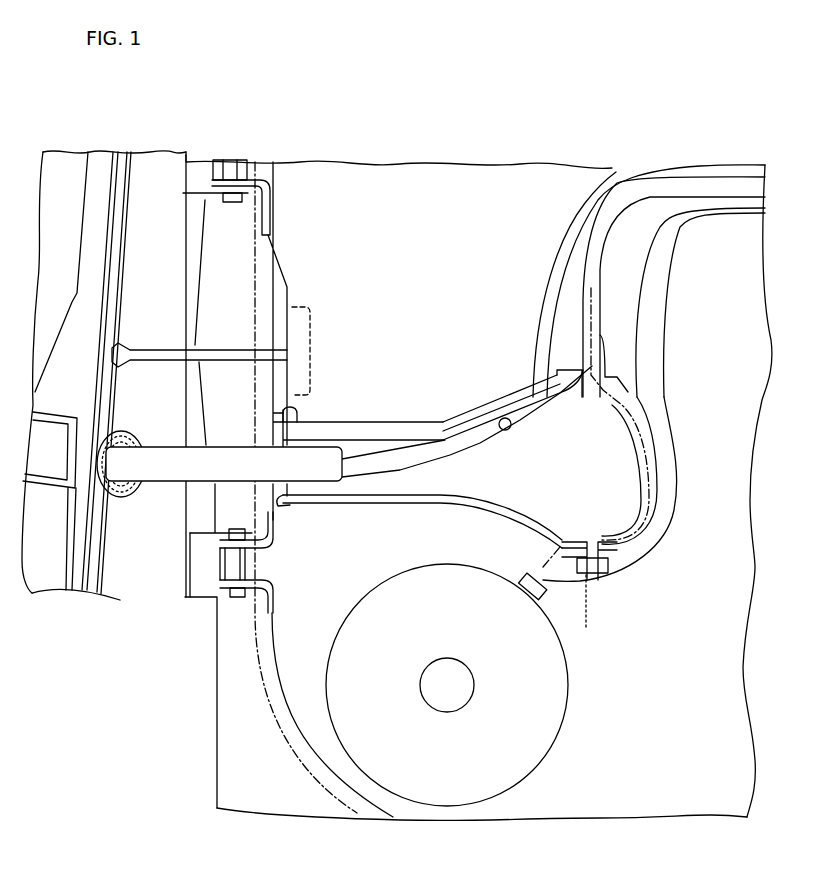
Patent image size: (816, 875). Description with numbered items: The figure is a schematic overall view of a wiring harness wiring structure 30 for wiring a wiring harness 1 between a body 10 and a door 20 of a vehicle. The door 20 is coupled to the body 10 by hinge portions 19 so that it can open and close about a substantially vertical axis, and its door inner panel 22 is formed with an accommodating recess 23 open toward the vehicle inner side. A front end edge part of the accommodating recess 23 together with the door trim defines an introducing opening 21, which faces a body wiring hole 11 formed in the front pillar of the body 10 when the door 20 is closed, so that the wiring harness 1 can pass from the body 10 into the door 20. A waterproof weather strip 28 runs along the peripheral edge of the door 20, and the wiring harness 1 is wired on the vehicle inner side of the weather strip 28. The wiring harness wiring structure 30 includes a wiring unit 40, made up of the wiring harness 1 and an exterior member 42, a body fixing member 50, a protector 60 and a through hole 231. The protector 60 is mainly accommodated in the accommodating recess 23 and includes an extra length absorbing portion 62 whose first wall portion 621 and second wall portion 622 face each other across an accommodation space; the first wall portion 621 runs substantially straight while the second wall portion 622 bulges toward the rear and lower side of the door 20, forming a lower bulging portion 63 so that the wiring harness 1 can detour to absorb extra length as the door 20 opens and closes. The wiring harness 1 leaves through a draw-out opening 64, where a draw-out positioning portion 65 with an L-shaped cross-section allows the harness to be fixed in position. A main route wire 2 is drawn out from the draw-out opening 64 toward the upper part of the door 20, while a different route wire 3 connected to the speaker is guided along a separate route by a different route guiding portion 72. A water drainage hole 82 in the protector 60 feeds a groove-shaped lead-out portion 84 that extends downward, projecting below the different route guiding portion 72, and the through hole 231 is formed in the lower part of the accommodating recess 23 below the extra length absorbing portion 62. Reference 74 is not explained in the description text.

The wiring harness 1 is at (367, 470).
The main route wire 2 is at (652, 195).
The different route wire 3 is at (608, 291).
The body 10 is at (162, 178).
The body wiring hole 11 is at (120, 428).
The hinge portion 19 is at (203, 170).
The door 20 is at (382, 180).
The introducing opening 21 is at (297, 411).
The door inner panel 22 is at (455, 180).
The accommodating recess 23 is at (385, 418).
The weather strip 28 is at (300, 760).
The wiring harness wiring structure 30 is at (242, 425).
The wiring unit 40 is at (172, 454).
The exterior member 42 is at (170, 482).
The body fixing member 50 is at (137, 509).
The protector 60 is at (437, 420).
The extra length absorbing portion 62 is at (523, 388).
The lower bulging portion 63 is at (548, 518).
The draw-out opening 64 is at (573, 378).
The draw-out positioning portion 65 is at (607, 351).
The different route guiding portion 72 is at (642, 410).
The lower flange 74 is at (300, 508).
The water drainage hole 82 is at (593, 546).
The lead-out portion 84 is at (593, 618).
The through hole 231 is at (595, 580).
The first wall portion 621 is at (502, 420).
The second wall portion 622 is at (628, 510).